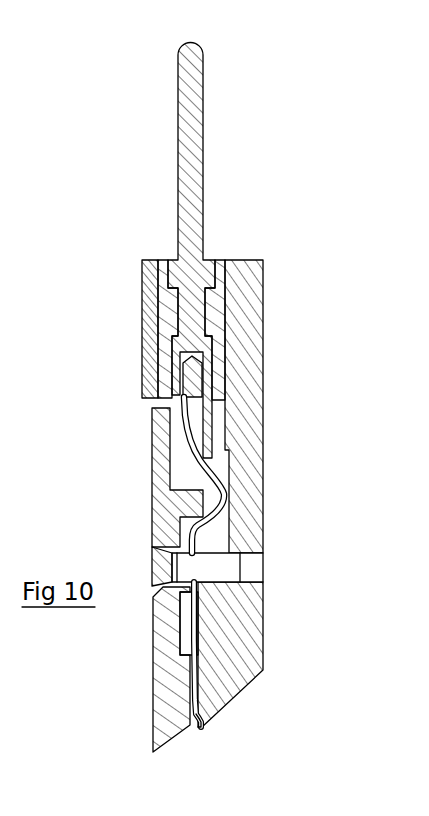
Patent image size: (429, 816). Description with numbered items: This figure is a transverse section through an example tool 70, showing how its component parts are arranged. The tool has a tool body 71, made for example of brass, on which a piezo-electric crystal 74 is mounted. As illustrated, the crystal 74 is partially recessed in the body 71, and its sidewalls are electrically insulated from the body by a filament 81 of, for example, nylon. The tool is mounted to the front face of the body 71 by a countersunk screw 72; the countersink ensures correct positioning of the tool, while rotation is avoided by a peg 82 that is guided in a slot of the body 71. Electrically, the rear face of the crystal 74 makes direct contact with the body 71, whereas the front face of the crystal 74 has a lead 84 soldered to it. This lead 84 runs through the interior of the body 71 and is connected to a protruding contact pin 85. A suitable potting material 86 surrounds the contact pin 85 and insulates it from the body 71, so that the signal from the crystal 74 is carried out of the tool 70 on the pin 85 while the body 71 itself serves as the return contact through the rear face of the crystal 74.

The tool 70 is at (212, 408).
The tool body 71 is at (245, 491).
The countersunk screw 72 is at (146, 558).
The piezo-electric crystal 74 is at (208, 647).
The filament 81 is at (210, 710).
The peg 82 is at (194, 505).
The lead 84 is at (208, 475).
The contact pin 85 is at (190, 207).
The potting material 86 is at (166, 316).